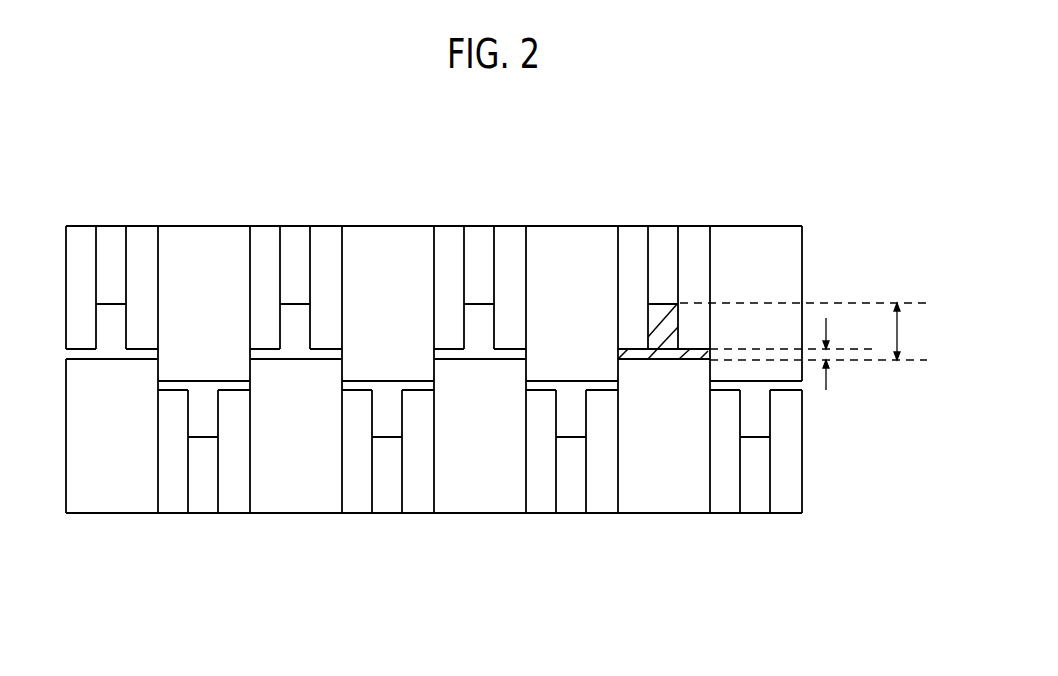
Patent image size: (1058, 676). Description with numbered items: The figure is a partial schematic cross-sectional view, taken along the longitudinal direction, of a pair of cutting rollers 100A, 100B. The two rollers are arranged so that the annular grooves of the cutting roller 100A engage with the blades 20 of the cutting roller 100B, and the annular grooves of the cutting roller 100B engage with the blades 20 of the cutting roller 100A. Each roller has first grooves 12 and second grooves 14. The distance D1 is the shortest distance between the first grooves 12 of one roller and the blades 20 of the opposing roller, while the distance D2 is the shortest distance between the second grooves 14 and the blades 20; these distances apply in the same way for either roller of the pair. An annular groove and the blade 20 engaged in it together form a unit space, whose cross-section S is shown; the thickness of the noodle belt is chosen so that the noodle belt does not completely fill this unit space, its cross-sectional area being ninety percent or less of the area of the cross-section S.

The cutting roller 100A is at (820, 248).
The cutting roller 100B is at (817, 467).
The first groove 12 is at (697, 350).
The second groove 14 is at (662, 303).
The blade 20 is at (678, 355).
The cross-section of the unit space S is at (665, 352).
The shortest distance D1 is at (828, 355).
The shortest distance D2 is at (900, 332).